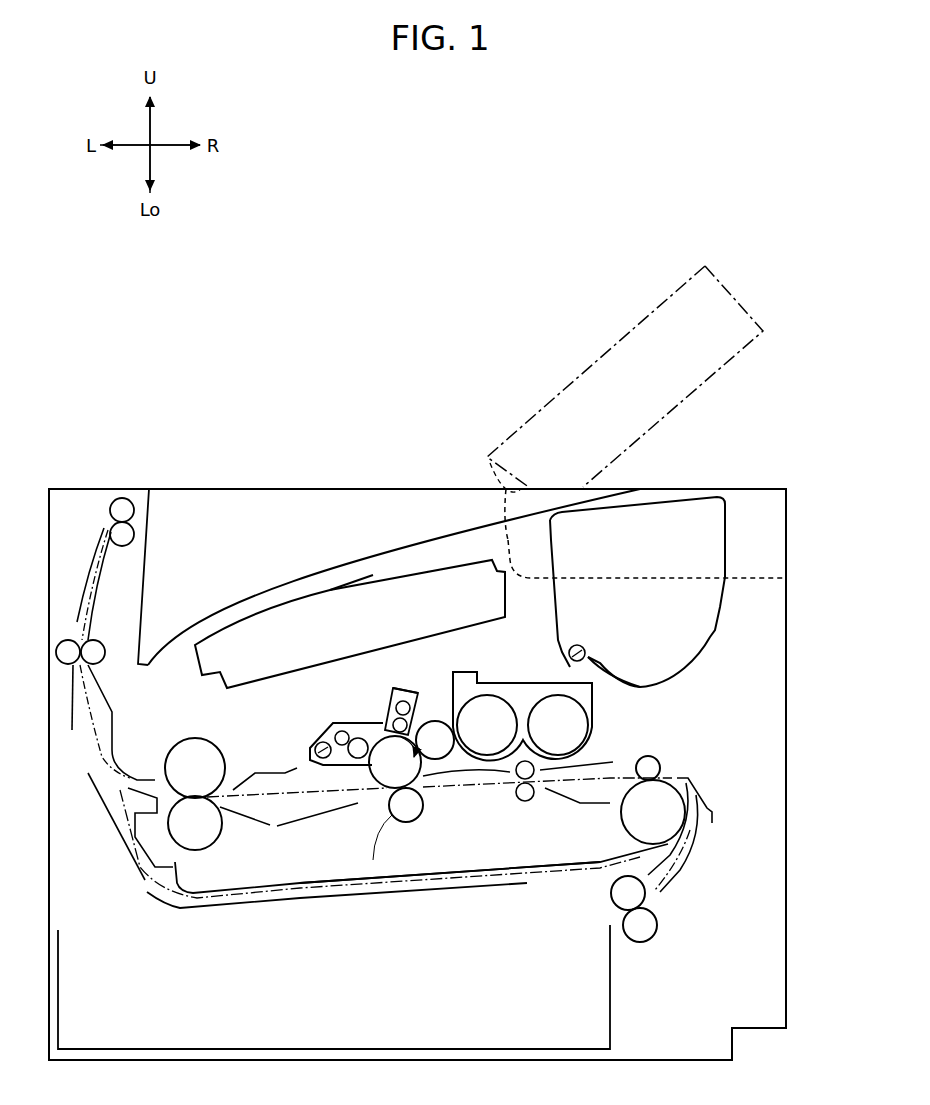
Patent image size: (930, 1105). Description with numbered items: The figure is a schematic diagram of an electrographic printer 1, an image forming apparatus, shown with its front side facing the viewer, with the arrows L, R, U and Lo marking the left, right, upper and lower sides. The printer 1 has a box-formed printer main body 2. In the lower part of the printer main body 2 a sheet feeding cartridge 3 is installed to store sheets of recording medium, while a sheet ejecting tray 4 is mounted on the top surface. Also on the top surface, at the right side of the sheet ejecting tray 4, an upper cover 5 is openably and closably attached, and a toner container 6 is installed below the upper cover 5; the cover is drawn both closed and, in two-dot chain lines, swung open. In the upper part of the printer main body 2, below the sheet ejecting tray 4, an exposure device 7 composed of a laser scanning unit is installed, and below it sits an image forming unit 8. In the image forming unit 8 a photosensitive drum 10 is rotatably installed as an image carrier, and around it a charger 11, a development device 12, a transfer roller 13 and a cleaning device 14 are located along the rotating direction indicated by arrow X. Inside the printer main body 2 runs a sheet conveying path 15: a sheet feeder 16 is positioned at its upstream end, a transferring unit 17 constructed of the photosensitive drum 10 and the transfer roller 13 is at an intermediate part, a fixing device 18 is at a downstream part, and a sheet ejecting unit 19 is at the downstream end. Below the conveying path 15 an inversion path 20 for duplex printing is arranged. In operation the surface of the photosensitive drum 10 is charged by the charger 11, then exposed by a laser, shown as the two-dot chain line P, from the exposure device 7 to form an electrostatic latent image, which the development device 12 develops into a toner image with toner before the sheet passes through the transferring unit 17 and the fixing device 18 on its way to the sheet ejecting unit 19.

The printer 1 is at (50, 352).
The printer main body 2 is at (801, 620).
The sheet feeding cartridge 3 is at (610, 970).
The sheet ejecting tray 4 is at (301, 566).
The upper cover 5 is at (717, 273).
The toner container 6 is at (692, 663).
The exposure device 7 is at (372, 575).
The image forming unit 8 is at (380, 813).
The photosensitive drum 10 is at (391, 695).
The charger 11 is at (402, 688).
The development device 12 is at (593, 718).
The transfer roller 13 is at (373, 860).
The cleaning device 14 is at (346, 720).
The sheet conveying path 15 is at (257, 797).
The sheet feeder 16 is at (668, 916).
The transferring unit 17 is at (431, 795).
The fixing device 18 is at (234, 824).
The sheet ejecting unit 19 is at (165, 507).
The inversion path 20 is at (402, 887).
The laser P is at (421, 732).
The rotating direction X is at (395, 762).